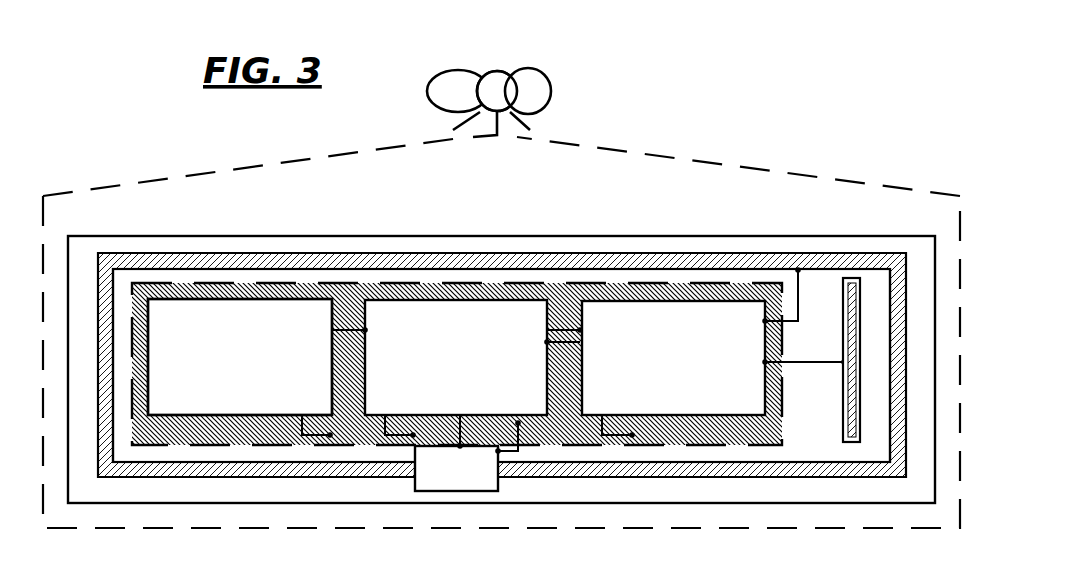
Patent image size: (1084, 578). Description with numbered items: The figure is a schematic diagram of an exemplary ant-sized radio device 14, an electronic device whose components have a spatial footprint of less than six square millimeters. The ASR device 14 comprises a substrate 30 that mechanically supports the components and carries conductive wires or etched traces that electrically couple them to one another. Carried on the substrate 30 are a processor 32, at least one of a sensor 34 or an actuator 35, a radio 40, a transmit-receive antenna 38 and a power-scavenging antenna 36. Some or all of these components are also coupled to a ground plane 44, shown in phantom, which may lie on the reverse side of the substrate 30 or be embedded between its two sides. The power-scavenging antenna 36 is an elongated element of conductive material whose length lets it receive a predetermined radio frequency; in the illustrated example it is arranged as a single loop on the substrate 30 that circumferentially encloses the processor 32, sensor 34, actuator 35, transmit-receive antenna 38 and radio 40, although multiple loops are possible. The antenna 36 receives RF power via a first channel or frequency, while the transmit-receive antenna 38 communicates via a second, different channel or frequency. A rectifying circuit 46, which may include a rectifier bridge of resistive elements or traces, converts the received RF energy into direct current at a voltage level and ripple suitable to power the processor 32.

The ant-sized radio (ASR) device 14 is at (464, 68).
The substrate 30 is at (823, 305).
The processor 32 is at (457, 369).
The sensor 34 is at (240, 368).
The actuator 35 is at (240, 357).
The power-scavenging antenna 36 is at (578, 250).
The transmit-receive antenna 38 is at (842, 392).
The radio 40 is at (714, 352).
The ground plane 44 is at (357, 282).
The rectifying circuit 46 is at (468, 453).